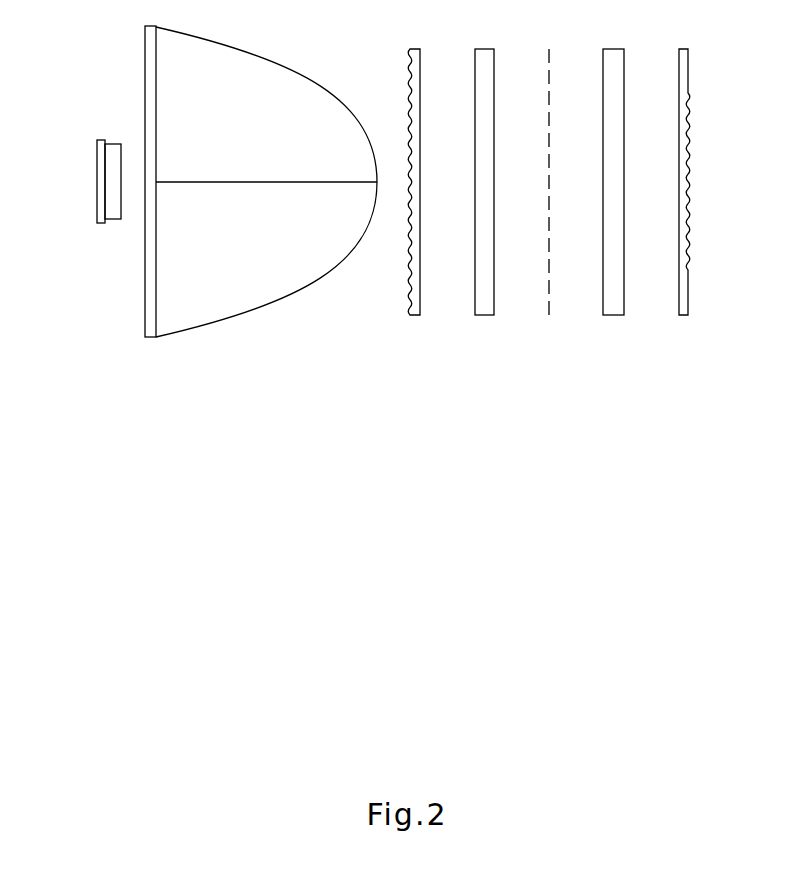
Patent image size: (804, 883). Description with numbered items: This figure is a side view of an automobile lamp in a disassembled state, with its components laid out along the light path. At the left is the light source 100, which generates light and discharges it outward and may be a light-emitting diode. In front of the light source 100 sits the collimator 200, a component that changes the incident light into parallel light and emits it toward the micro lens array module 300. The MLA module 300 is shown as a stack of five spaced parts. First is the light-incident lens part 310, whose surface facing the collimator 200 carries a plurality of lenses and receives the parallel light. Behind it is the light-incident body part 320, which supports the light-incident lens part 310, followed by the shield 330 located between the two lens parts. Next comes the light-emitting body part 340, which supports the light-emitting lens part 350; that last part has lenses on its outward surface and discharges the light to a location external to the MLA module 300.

The light source 100 is at (97, 181).
The collimator 200 is at (220, 320).
The micro lens array (MLA) module 300 is at (549, 332).
The light-incident lens part 310 is at (415, 315).
The light-incident body part 320 is at (484, 315).
The shield 330 is at (549, 315).
The light-emitting body part 340 is at (613, 315).
The light-emitting lens part 350 is at (683, 315).